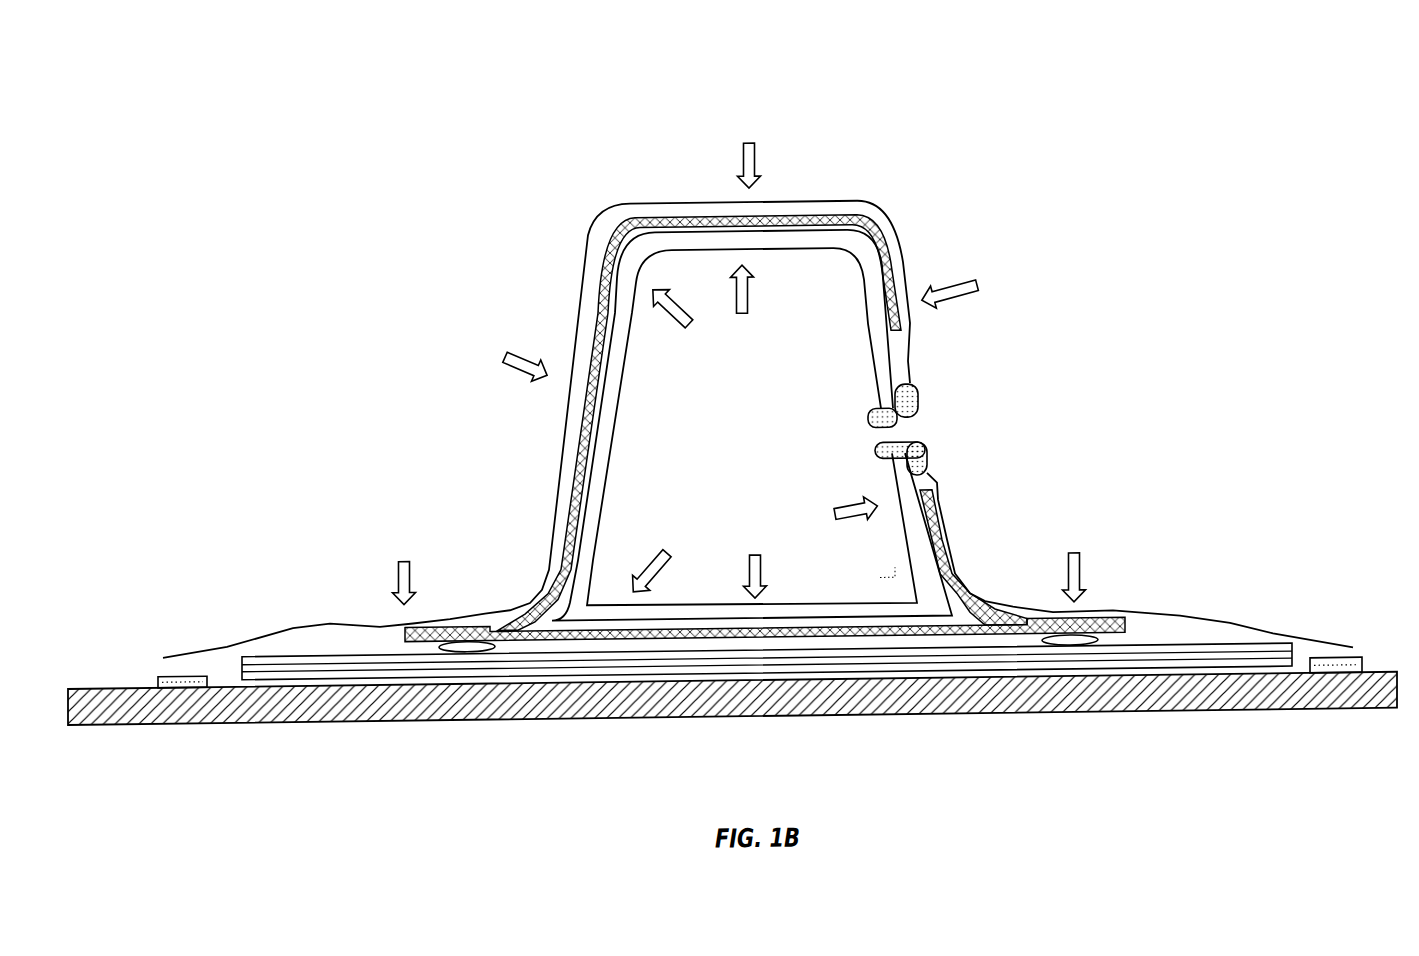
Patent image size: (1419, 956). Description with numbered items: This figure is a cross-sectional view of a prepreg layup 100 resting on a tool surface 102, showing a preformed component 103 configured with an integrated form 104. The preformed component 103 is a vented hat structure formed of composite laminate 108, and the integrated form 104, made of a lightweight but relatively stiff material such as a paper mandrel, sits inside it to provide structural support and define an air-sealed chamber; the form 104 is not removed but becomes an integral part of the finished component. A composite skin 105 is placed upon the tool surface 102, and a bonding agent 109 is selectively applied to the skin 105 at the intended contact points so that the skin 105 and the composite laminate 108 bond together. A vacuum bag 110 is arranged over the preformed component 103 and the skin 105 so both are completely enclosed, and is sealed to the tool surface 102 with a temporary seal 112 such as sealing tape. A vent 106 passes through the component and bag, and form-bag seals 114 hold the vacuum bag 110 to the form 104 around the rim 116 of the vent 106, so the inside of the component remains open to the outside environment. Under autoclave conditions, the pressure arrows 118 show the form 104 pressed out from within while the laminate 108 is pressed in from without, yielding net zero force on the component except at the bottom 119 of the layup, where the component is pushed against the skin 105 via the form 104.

The prepreg layup 100 is at (383, 132).
The tool surface 102 is at (1310, 726).
The preformed component 103 is at (765, 420).
The composite laminate 108 is at (765, 420).
The integrated form 104 is at (612, 500).
The composite skin 105 is at (1250, 659).
The vent 106 is at (923, 433).
The bonding agent 109 is at (473, 632).
The vacuum bag 110 is at (582, 279).
The temporary seal 112 is at (160, 681).
The form-bag seal 114 is at (918, 396).
The rim 116 is at (875, 403).
The pressure arrows 118 is at (757, 157).
The bottom 119 is at (830, 615).